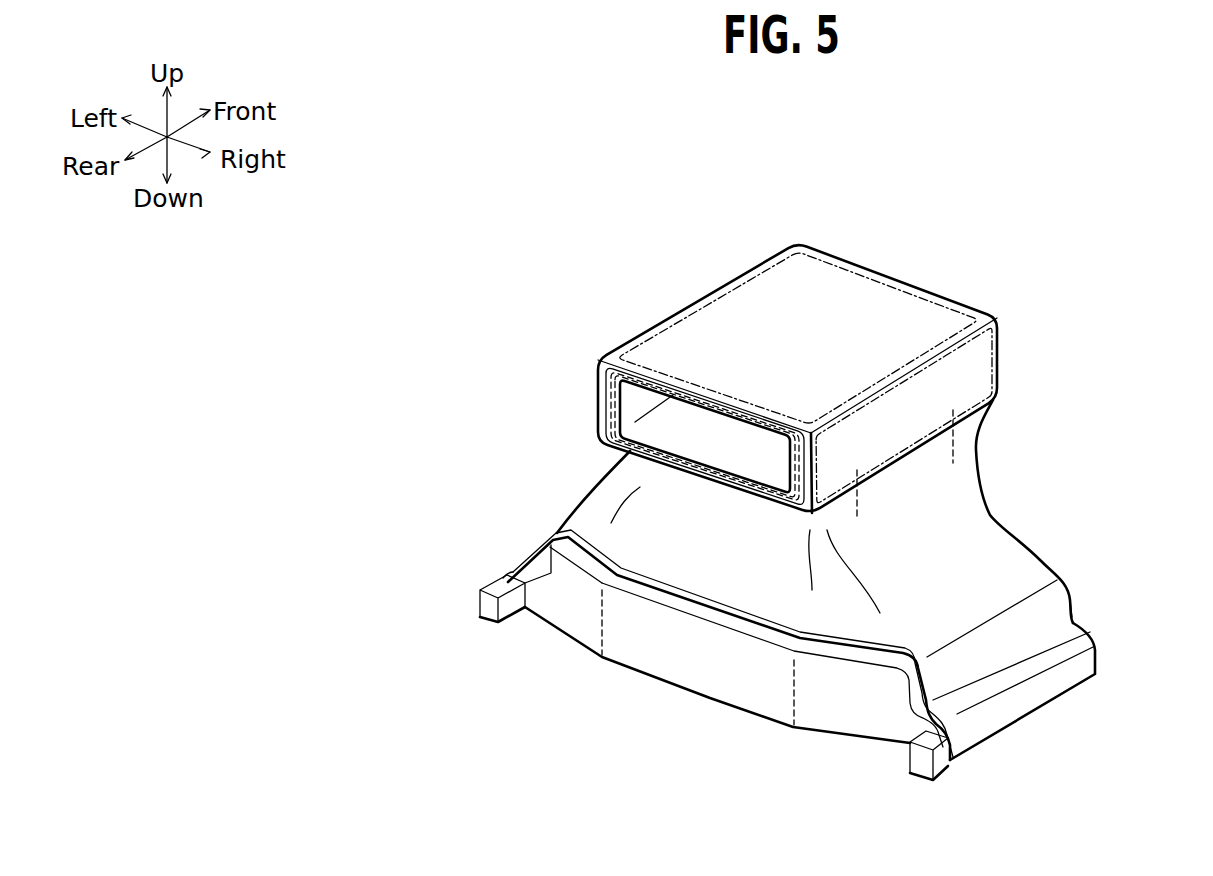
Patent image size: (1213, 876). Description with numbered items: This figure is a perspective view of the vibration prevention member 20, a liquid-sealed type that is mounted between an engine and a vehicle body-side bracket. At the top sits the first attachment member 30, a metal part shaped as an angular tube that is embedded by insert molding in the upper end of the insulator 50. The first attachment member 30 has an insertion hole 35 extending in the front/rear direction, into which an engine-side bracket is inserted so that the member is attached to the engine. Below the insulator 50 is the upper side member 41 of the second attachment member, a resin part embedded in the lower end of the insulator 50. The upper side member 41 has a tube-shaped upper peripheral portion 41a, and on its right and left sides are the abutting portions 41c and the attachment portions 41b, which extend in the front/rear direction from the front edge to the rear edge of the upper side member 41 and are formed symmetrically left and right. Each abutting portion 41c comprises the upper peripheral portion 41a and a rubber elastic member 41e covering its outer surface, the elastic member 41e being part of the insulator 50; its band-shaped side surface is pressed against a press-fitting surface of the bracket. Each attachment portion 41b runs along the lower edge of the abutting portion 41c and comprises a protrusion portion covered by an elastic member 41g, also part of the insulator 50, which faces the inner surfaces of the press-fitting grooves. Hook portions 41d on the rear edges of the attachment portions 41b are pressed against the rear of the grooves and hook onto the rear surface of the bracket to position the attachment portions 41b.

The vibration prevention member 20 is at (663, 256).
The first attachment member 30 is at (1000, 353).
The insertion hole 35 is at (632, 397).
The upper side member 41 is at (707, 687).
The upper peripheral portion 41a is at (560, 567).
The attachment portion 41b is at (502, 577).
The abutting portion 41c is at (560, 530).
The hook portion 41d is at (480, 617).
The elastic member 41e is at (1072, 602).
The elastic member 41g is at (1097, 658).
The insulator 50 is at (1000, 540).